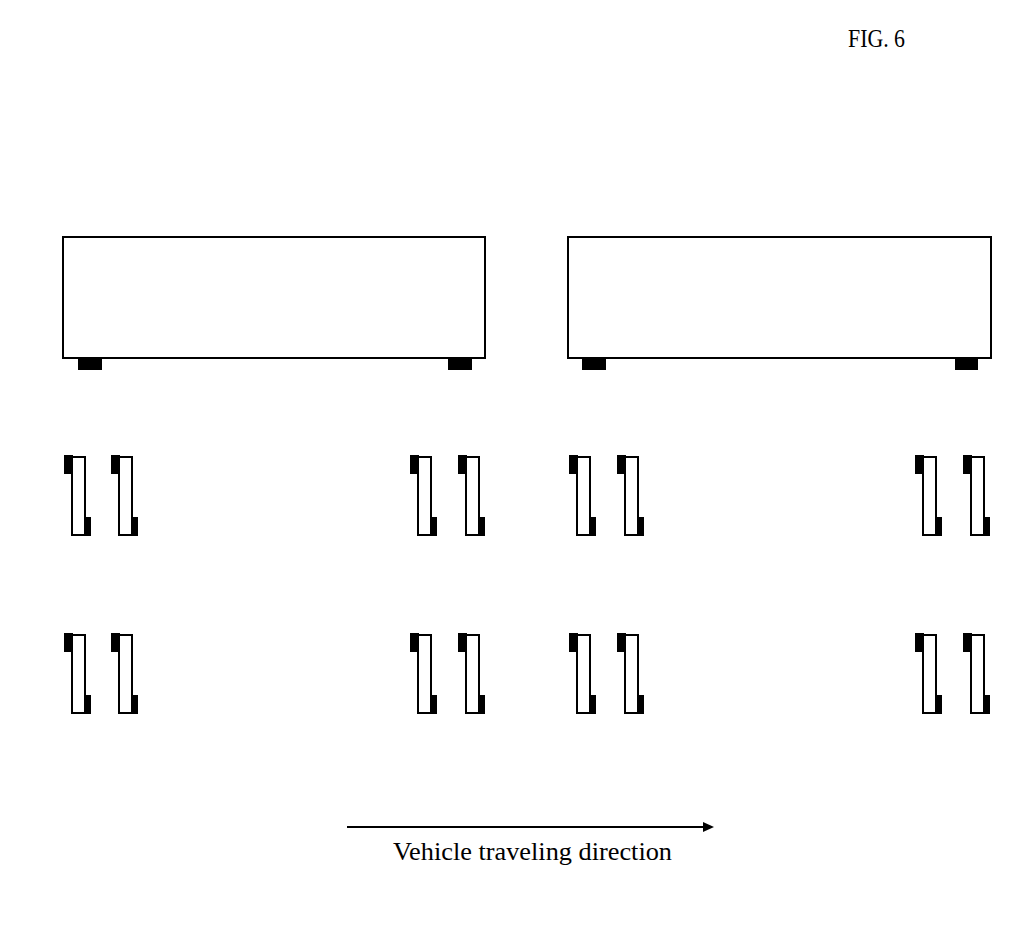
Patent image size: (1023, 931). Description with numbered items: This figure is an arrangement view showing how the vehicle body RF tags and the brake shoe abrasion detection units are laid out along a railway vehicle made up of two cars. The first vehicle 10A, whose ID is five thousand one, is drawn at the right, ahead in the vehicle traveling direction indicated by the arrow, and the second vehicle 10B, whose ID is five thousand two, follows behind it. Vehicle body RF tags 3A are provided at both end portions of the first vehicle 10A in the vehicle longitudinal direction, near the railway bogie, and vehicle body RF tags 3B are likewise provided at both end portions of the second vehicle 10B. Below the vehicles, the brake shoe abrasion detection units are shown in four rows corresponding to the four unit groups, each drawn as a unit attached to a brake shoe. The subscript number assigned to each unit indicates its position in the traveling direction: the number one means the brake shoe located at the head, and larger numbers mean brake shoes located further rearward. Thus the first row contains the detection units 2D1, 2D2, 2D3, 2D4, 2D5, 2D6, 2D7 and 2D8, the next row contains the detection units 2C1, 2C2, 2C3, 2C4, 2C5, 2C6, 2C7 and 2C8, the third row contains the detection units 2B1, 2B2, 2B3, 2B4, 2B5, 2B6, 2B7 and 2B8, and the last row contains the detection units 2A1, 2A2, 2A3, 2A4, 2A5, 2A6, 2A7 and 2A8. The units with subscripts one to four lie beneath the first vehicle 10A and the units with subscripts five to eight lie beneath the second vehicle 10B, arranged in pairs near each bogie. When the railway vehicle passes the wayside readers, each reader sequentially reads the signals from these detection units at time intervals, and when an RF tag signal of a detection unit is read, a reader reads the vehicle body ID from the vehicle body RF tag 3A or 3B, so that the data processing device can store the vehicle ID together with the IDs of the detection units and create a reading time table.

The first vehicle 10A is at (913, 237).
The second vehicle 10B is at (407, 237).
The vehicle body RF tag 3A is at (607, 365).
The vehicle body RF tag 3B is at (103, 365).
The brake shoe abrasion detection unit 2D8 is at (69, 456).
The brake shoe abrasion detection unit 2D7 is at (116, 456).
The brake shoe abrasion detection unit 2D6 is at (415, 456).
The brake shoe abrasion detection unit 2D5 is at (463, 456).
The brake shoe abrasion detection unit 2D4 is at (574, 456).
The brake shoe abrasion detection unit 2D3 is at (622, 456).
The brake shoe abrasion detection unit 2D2 is at (920, 456).
The brake shoe abrasion detection unit 2D1 is at (968, 456).
The brake shoe abrasion detection unit 2C8 is at (87, 537).
The brake shoe abrasion detection unit 2C7 is at (134, 537).
The brake shoe abrasion detection unit 2C6 is at (433, 537).
The brake shoe abrasion detection unit 2C5 is at (481, 537).
The brake shoe abrasion detection unit 2C4 is at (592, 537).
The brake shoe abrasion detection unit 2C3 is at (640, 537).
The brake shoe abrasion detection unit 2C2 is at (938, 537).
The brake shoe abrasion detection unit 2C1 is at (986, 537).
The brake shoe abrasion detection unit 2B8 is at (69, 634).
The brake shoe abrasion detection unit 2B7 is at (116, 634).
The brake shoe abrasion detection unit 2B6 is at (415, 634).
The brake shoe abrasion detection unit 2B5 is at (463, 634).
The brake shoe abrasion detection unit 2B4 is at (574, 634).
The brake shoe abrasion detection unit 2B3 is at (622, 634).
The brake shoe abrasion detection unit 2B2 is at (920, 634).
The brake shoe abrasion detection unit 2B1 is at (968, 634).
The brake shoe abrasion detection unit 2A8 is at (87, 715).
The brake shoe abrasion detection unit 2A7 is at (134, 715).
The brake shoe abrasion detection unit 2A6 is at (433, 715).
The brake shoe abrasion detection unit 2A5 is at (481, 715).
The brake shoe abrasion detection unit 2A4 is at (592, 715).
The brake shoe abrasion detection unit 2A3 is at (640, 715).
The brake shoe abrasion detection unit 2A2 is at (938, 715).
The brake shoe abrasion detection unit 2A1 is at (986, 715).